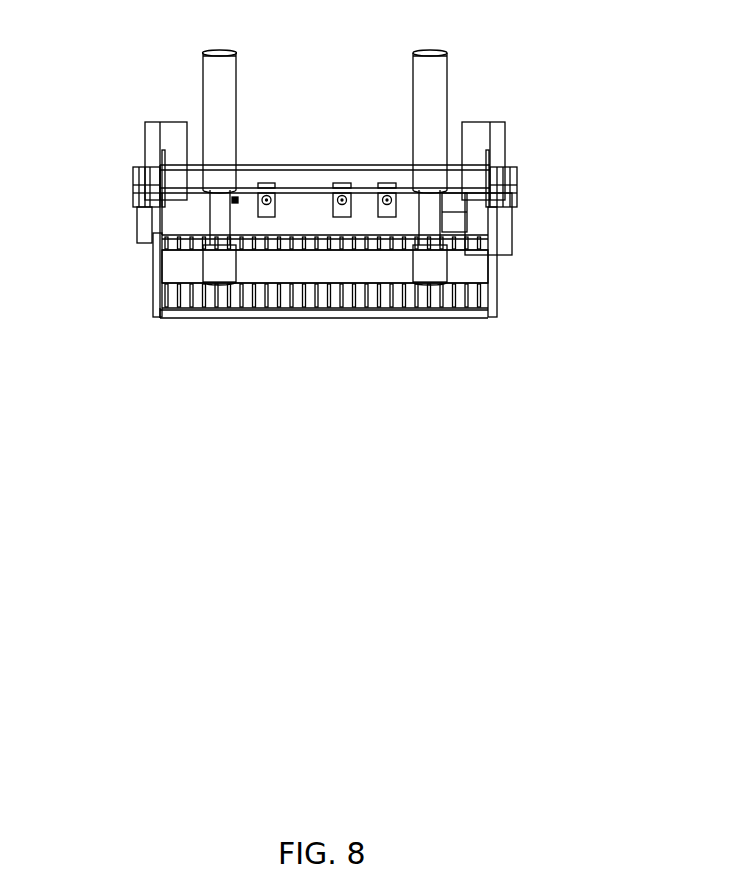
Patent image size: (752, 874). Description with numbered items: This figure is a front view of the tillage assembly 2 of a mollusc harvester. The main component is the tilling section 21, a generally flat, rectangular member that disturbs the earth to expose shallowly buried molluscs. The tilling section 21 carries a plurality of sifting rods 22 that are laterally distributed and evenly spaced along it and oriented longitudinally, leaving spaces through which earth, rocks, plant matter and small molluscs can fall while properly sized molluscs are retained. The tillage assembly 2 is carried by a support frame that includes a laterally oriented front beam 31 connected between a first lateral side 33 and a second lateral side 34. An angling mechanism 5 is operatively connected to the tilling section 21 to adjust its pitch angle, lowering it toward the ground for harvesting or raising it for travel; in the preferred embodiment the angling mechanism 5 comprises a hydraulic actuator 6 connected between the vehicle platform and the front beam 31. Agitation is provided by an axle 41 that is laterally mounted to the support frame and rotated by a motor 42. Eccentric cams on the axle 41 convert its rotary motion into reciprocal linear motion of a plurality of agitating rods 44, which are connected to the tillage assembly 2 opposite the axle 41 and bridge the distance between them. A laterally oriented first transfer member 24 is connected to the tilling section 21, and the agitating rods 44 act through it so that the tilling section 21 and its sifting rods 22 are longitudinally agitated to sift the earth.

The tillage assembly 2 is at (452, 400).
The angling mechanism 5 is at (210, 35).
The hydraulic actuator 6 is at (213, 87).
The tilling section 21 is at (290, 325).
The sifting rods 22 is at (352, 292).
The first transfer member 24 is at (300, 192).
The front beam 31 is at (473, 266).
The first lateral side 33 is at (546, 237).
The second lateral side 34 is at (120, 223).
The axle 41 is at (378, 193).
The motor 42 is at (455, 212).
The agitating rods 44 is at (266, 195).